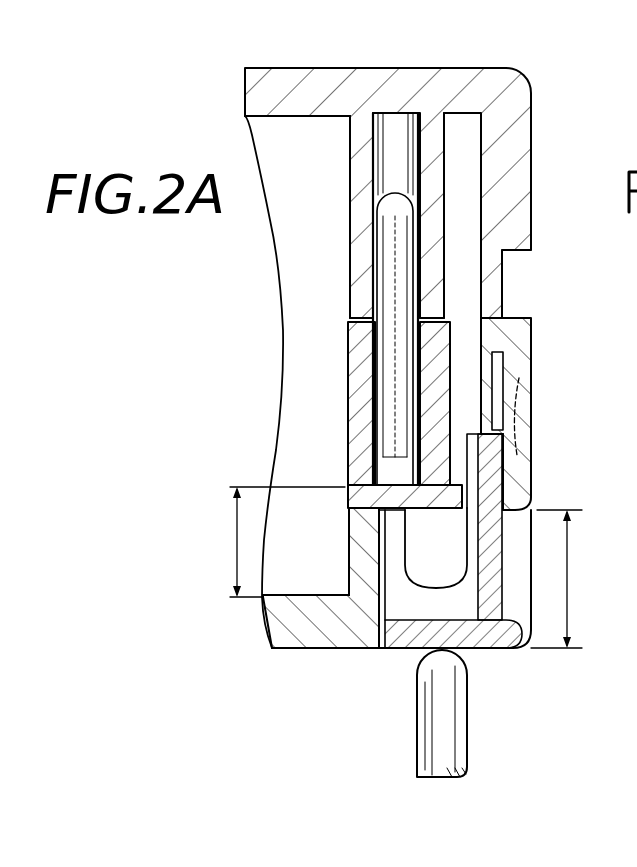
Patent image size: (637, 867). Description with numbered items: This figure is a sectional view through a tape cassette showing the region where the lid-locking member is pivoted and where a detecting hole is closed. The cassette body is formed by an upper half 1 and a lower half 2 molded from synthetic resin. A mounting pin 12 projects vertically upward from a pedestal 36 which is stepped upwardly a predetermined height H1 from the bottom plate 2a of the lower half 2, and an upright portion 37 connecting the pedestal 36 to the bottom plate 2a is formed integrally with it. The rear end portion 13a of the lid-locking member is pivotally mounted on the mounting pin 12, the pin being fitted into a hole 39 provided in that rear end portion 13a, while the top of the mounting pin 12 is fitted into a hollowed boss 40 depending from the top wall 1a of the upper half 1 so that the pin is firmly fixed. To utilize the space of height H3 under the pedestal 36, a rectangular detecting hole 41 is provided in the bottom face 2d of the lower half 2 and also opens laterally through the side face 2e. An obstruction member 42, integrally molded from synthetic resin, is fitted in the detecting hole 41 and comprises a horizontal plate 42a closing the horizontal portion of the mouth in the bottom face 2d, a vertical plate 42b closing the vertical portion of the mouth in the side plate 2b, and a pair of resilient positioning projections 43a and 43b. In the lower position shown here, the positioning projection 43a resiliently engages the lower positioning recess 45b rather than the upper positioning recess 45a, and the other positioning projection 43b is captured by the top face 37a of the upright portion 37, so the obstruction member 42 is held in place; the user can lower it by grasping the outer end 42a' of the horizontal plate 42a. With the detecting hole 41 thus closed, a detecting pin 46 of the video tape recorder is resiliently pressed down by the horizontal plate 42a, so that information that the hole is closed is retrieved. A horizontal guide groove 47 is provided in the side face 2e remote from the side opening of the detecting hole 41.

The upper half 1 is at (236, 82).
The top wall 1a is at (258, 114).
The lower half 2 is at (298, 652).
The bottom plate 2a is at (290, 627).
The side plate 2b is at (520, 370).
The bottom face 2d is at (328, 655).
The side face 2e is at (535, 422).
The mounting pin 12 is at (392, 240).
The rear end portion 13a is at (348, 369).
The pedestal 36 is at (376, 523).
The upright portion 37 is at (356, 563).
The top face 37a is at (348, 483).
The hole 39 is at (383, 337).
The hollowed boss 40 is at (350, 279).
The detecting hole 41 is at (408, 652).
The obstruction member 42 is at (487, 652).
The horizontal plate 42a is at (472, 677).
The outer end 42a' is at (552, 653).
The vertical plate 42b is at (492, 553).
The positioning projection 43a is at (527, 408).
The positioning projection 43b is at (352, 462).
The upper positioning recess 45a is at (498, 350).
The lower positioning recess 45b is at (503, 452).
The detecting pin 46 is at (432, 718).
The horizontal guide groove 47 is at (520, 257).
The height H1 is at (260, 542).
The height H3 is at (580, 579).